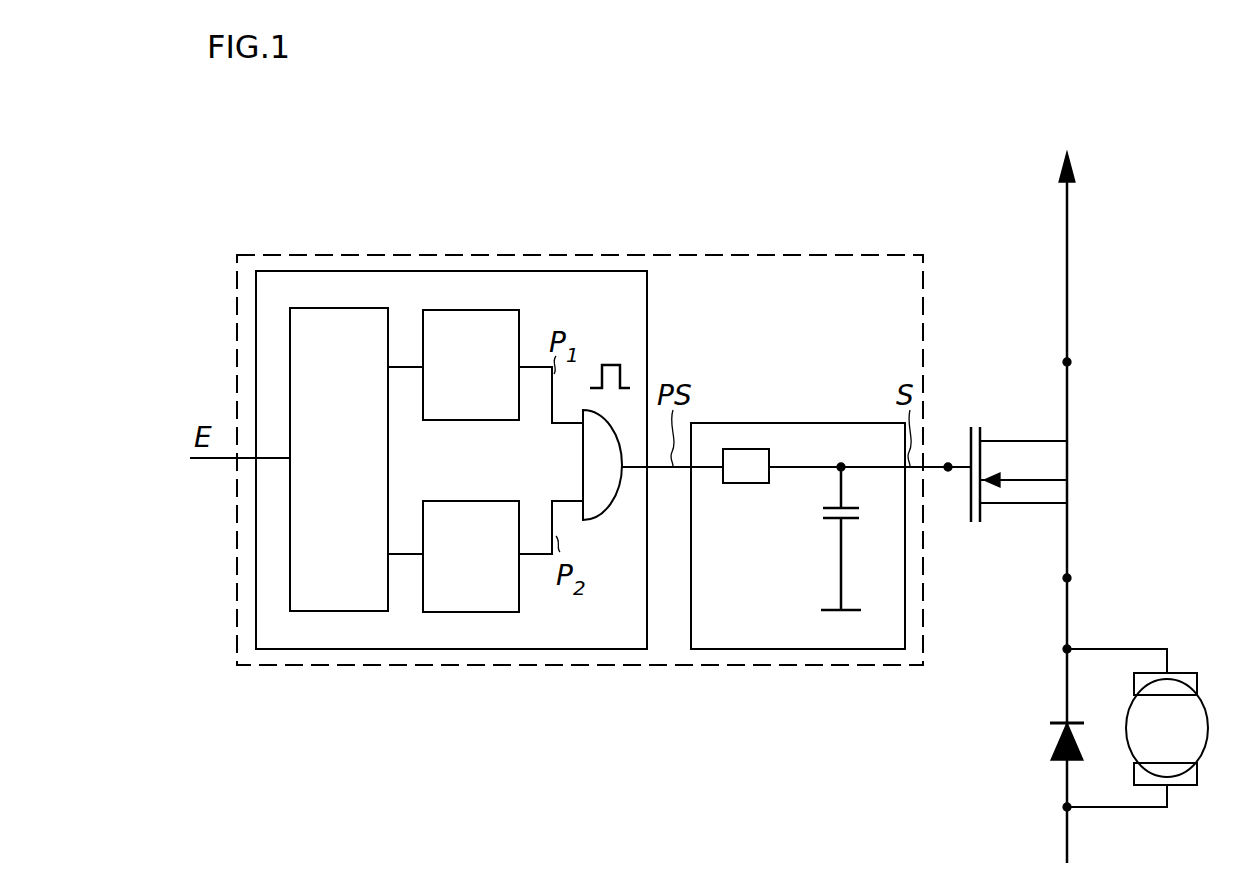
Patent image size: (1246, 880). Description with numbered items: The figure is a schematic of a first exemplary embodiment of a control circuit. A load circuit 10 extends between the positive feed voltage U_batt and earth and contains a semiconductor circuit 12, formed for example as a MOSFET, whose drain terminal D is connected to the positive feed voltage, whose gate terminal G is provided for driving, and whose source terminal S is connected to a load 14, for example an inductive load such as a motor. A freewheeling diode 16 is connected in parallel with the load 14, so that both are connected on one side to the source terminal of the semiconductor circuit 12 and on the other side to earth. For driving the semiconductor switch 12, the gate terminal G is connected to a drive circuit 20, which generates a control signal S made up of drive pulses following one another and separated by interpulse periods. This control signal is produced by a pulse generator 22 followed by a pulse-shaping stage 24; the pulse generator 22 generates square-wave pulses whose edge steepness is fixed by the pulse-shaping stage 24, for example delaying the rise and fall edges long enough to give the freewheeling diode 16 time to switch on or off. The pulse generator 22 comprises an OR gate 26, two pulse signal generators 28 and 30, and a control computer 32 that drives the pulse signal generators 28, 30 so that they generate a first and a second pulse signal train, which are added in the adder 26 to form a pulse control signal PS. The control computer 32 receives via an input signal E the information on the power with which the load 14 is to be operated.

The load circuit 10 is at (1088, 283).
The semiconductor circuit 12 is at (1100, 466).
The load 14 is at (1216, 688).
The freewheeling diode 16 is at (1042, 792).
The drive circuit 20 is at (497, 248).
The pulse generator 22 is at (462, 633).
The pulse-shaping stage 24 is at (716, 605).
The OR gate 26 is at (620, 495).
The pulse signal generator 28 is at (435, 342).
The pulse signal generator 30 is at (438, 587).
The control computer 32 is at (335, 575).